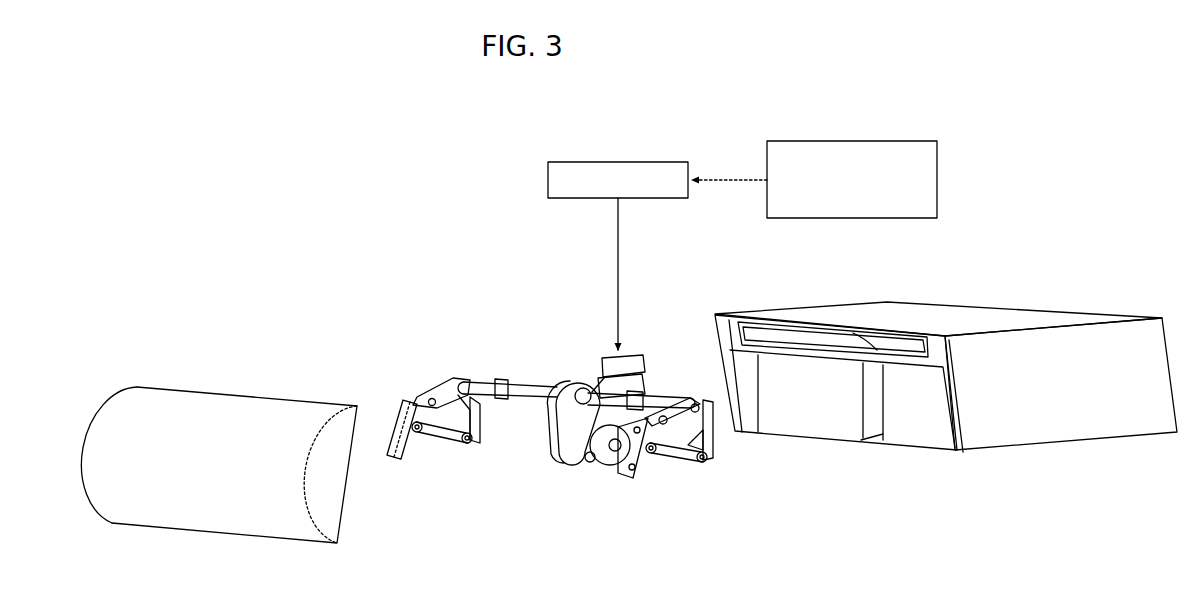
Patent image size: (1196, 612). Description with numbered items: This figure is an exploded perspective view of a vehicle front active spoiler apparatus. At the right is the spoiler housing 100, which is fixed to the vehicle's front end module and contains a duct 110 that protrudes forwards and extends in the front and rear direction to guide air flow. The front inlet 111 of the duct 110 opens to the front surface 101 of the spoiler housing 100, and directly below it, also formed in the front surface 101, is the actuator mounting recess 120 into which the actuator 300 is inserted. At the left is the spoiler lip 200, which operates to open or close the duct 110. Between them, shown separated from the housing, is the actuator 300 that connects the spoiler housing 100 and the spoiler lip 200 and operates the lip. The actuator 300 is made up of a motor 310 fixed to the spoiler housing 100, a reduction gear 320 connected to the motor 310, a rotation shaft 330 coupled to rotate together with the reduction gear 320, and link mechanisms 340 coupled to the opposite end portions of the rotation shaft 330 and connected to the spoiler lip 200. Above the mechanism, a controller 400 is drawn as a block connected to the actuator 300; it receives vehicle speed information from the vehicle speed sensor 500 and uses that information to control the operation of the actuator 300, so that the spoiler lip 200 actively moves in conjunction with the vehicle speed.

The spoiler housing 100 is at (1102, 425).
The front surface 101 is at (730, 328).
The duct 110 is at (908, 343).
The front inlet 111 is at (807, 337).
The actuator mounting recess 120 is at (900, 425).
The spoiler lip 200 is at (193, 403).
The actuator 300 is at (608, 480).
The motor 310 is at (638, 357).
The reduction gear 320 is at (547, 440).
The rotation shaft 330 is at (537, 388).
The link mechanisms 340 is at (402, 407).
The controller 400 is at (618, 160).
The vehicle speed sensor 500 is at (838, 141).